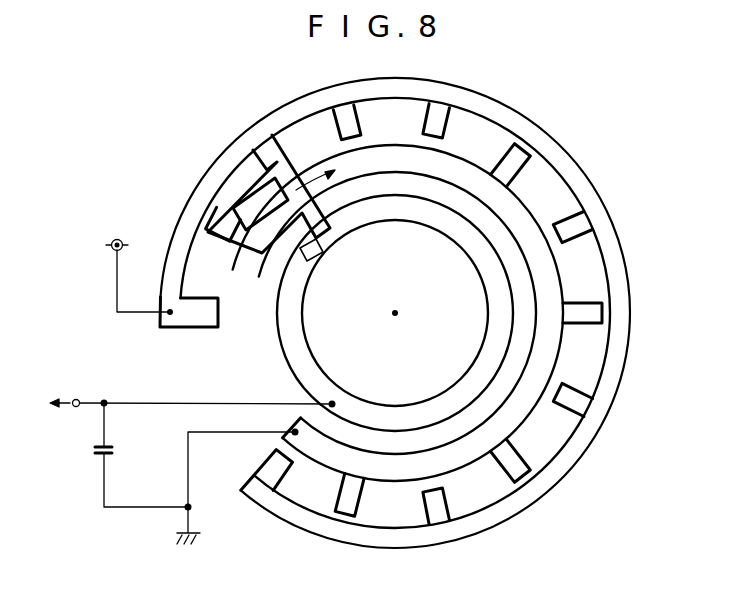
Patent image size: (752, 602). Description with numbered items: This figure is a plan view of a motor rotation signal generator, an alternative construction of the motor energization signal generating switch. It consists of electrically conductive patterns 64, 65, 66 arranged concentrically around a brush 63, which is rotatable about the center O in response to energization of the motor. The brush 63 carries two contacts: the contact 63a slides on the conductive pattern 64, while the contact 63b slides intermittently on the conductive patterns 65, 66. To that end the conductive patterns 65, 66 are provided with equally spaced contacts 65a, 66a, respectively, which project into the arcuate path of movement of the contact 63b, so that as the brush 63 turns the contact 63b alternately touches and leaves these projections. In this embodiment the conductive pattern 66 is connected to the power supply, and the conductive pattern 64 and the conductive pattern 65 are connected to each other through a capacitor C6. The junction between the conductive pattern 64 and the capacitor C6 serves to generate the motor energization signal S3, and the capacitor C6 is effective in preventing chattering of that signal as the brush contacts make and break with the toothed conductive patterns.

The brush 63 is at (262, 182).
The contact 63a is at (308, 256).
The contact 63b is at (228, 238).
The conductive pattern 64 is at (411, 412).
The conductive pattern 65 is at (522, 222).
The contacts 65a is at (215, 218).
The conductive pattern 66 is at (619, 268).
The contacts 66a is at (560, 237).
The center O is at (397, 313).
The motor energization signal S3 is at (179, 403).
The capacitor C6 is at (92, 449).